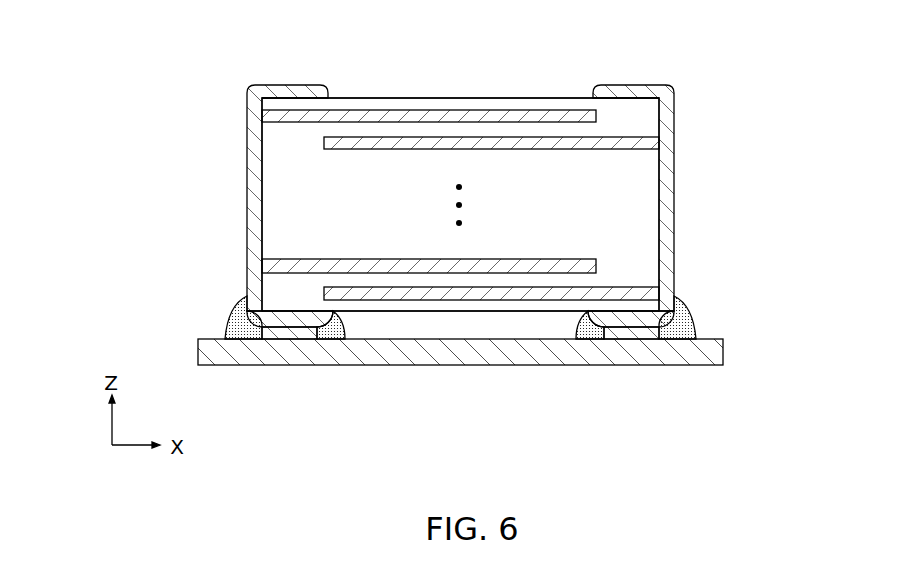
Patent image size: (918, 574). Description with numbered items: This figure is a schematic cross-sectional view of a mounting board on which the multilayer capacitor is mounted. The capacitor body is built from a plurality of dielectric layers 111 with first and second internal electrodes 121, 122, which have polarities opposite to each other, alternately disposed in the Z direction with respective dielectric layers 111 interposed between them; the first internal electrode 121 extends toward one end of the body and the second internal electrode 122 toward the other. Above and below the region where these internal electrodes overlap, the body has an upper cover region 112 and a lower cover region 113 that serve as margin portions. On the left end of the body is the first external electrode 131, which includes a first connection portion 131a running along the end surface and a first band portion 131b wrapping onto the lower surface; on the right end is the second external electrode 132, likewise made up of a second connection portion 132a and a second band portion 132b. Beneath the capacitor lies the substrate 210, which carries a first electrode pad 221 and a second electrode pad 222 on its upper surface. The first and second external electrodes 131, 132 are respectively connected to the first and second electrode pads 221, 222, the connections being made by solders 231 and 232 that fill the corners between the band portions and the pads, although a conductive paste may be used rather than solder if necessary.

The dielectric layer 111 is at (536, 279).
The upper cover region 112 is at (468, 103).
The lower cover region 113 is at (468, 304).
The first internal electrode 121 is at (307, 114).
The second internal electrode 122 is at (572, 291).
The first external electrode 131 is at (210, 206).
The first connection portion 131a is at (248, 223).
The first band portion 131b is at (241, 313).
The second external electrode 132 is at (710, 206).
The second connection portion 132a is at (675, 222).
The second band portion 132b is at (680, 313).
The substrate 210 is at (380, 350).
The first electrode pad 221 is at (288, 341).
The second electrode pad 222 is at (639, 339).
The solder 231 is at (229, 342).
The solder 232 is at (688, 335).